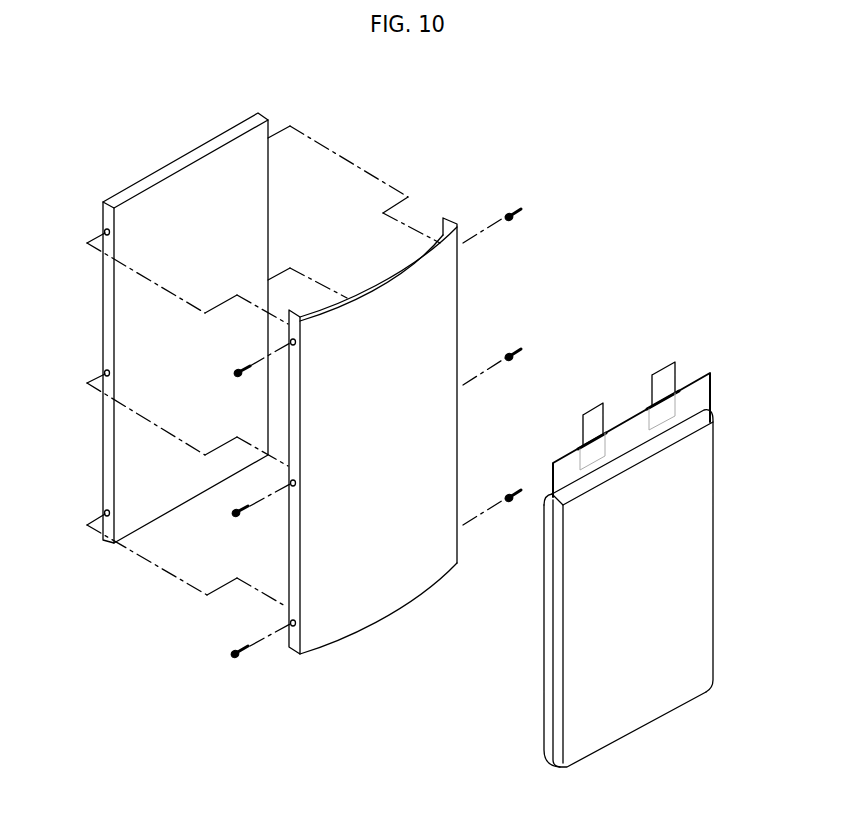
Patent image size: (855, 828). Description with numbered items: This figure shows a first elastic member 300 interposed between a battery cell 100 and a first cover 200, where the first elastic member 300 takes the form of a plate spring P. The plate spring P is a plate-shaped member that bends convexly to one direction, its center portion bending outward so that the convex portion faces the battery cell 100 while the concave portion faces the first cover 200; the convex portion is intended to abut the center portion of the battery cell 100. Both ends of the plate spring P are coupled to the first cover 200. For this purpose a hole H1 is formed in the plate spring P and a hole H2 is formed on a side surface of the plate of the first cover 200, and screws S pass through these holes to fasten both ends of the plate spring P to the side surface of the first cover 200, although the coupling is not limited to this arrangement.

The battery cell 100 is at (706, 474).
The first cover 200 is at (207, 148).
The first elastic member 300 is at (415, 436).
The plate spring P is at (441, 411).
The screw S is at (235, 373).
The hole H1 is at (296, 343).
The hole H2 is at (104, 231).